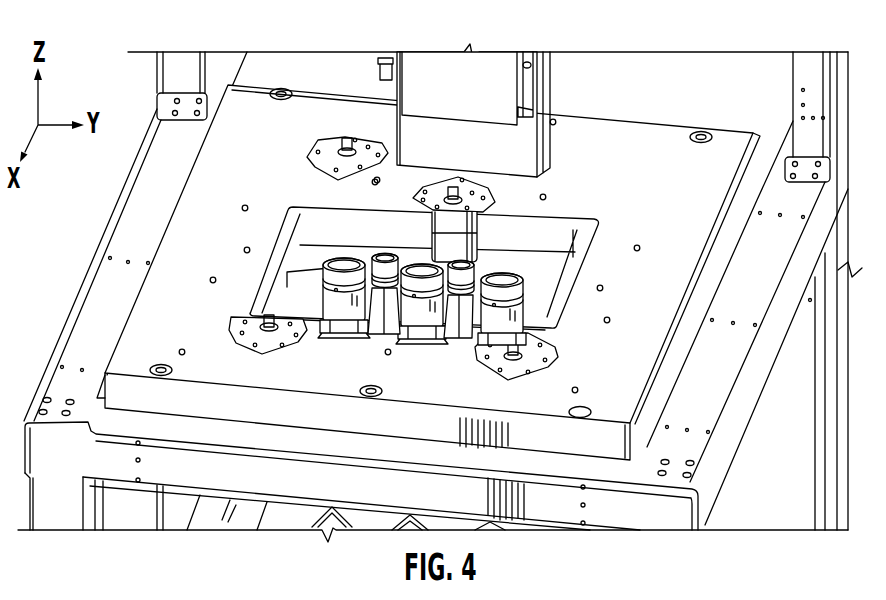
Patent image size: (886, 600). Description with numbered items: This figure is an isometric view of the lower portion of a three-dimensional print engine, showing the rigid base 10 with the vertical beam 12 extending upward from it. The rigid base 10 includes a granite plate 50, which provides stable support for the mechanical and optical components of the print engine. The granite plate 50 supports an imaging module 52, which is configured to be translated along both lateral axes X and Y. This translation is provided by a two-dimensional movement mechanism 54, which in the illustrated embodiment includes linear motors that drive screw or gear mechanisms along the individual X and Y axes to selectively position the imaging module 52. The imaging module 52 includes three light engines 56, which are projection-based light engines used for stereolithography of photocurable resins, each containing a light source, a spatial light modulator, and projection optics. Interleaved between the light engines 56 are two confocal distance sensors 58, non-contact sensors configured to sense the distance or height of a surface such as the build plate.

The rigid base 10 is at (670, 82).
The vertical beam 12 is at (493, 82).
The granite plate 50 is at (197, 223).
The imaging module 52 is at (300, 294).
The movement mechanism 54 is at (292, 305).
The light engine 56 is at (520, 278).
The confocal distance sensor 58 is at (477, 264).